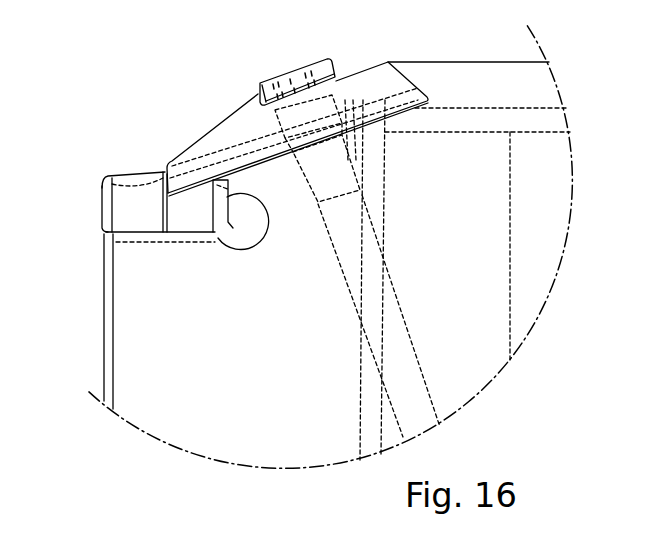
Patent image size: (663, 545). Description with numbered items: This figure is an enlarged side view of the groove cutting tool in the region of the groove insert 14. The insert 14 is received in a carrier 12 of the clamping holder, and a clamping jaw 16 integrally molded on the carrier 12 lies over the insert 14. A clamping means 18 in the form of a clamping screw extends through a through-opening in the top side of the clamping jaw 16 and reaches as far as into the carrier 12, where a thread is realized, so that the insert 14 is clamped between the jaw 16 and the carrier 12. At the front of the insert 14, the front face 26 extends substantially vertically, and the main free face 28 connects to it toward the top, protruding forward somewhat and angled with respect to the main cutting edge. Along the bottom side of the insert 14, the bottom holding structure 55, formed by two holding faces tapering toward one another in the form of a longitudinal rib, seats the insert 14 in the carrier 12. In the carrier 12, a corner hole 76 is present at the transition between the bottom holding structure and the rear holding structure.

The carrier 12 is at (242, 401).
The groove insert 14 is at (112, 192).
The clamping jaw 16 is at (227, 123).
The clamping means 18 is at (321, 57).
The front face 26 is at (103, 293).
The main free face 28 is at (102, 210).
The bottom holding structure 55 is at (165, 237).
The corner hole 76 is at (250, 237).